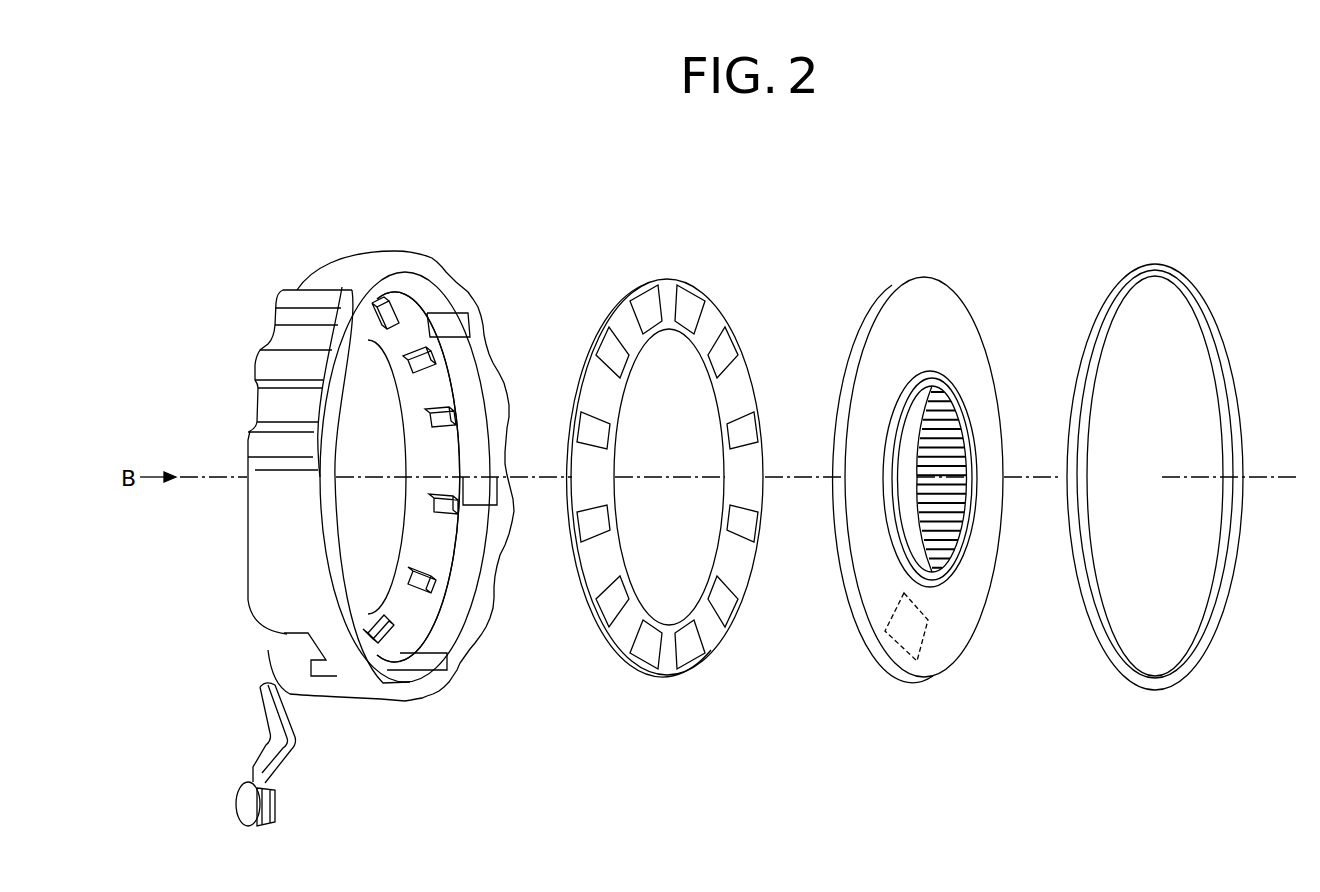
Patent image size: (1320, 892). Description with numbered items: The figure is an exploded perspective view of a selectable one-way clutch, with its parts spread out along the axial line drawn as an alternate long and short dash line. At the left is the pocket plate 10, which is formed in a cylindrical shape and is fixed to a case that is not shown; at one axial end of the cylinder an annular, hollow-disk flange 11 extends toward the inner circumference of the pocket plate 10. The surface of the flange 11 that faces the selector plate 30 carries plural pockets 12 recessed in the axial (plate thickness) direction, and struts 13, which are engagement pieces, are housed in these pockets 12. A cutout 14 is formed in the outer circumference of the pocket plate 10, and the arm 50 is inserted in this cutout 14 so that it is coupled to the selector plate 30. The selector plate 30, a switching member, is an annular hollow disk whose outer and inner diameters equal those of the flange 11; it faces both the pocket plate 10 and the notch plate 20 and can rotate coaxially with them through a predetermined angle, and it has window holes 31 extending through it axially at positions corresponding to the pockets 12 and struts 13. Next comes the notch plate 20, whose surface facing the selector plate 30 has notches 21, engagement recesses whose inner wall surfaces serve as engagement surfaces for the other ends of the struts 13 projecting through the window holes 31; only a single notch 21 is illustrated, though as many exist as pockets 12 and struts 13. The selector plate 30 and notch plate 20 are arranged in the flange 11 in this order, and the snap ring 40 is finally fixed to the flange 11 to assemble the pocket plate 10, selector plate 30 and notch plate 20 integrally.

The pocket plate 10 is at (375, 706).
The flange 11 is at (453, 458).
The pocket 12 is at (448, 556).
The strut 13 is at (430, 366).
The cutout 14 is at (290, 650).
The notch plate 20 is at (917, 681).
The notch 21 is at (890, 672).
The selector plate 30 is at (665, 676).
The window hole 31 is at (638, 310).
The snap ring 40 is at (1156, 690).
The arm 50 is at (287, 798).